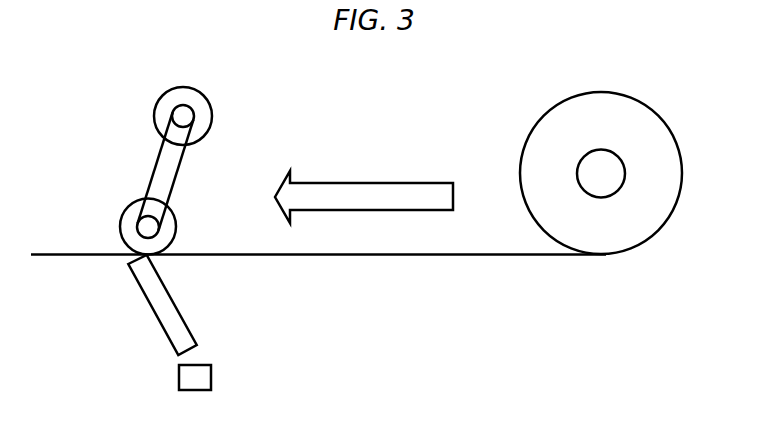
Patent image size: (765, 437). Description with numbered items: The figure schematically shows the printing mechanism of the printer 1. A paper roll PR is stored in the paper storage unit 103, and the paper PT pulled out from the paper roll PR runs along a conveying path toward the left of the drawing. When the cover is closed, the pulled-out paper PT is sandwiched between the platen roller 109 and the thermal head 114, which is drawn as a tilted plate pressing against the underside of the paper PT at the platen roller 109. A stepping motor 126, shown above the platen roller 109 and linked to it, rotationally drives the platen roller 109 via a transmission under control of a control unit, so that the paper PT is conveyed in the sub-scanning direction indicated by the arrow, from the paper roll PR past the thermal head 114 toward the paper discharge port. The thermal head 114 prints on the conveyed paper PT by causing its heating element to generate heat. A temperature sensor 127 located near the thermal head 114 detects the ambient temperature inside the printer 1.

The printer 1 is at (490, 108).
The paper PT is at (530, 256).
The paper storage unit 103 is at (605, 256).
The paper roll PR is at (662, 117).
The stepping motor 126 is at (183, 87).
The platen roller 109 is at (120, 211).
The thermal head 114 is at (163, 330).
The temperature sensor 127 is at (178, 382).